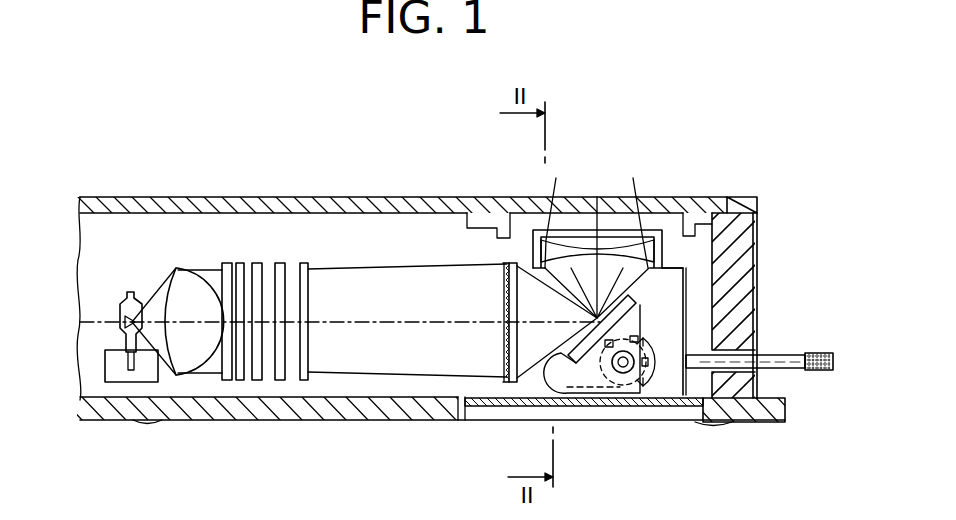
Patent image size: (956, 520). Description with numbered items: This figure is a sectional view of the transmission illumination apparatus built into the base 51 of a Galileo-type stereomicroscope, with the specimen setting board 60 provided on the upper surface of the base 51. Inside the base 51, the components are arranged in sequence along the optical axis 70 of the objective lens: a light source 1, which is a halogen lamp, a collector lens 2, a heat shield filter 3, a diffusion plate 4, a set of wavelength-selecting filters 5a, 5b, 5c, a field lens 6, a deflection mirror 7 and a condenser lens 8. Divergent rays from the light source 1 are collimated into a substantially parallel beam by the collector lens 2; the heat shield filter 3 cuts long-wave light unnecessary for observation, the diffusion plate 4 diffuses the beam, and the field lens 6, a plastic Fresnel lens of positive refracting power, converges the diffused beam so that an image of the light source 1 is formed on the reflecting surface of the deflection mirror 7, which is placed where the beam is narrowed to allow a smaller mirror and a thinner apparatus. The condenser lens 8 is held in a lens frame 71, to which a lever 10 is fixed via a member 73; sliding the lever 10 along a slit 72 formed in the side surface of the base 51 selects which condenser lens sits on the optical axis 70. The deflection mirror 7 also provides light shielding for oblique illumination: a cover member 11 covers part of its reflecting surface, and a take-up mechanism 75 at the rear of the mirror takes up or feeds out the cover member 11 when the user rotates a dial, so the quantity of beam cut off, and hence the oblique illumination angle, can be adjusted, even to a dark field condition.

The light source 1 is at (96, 228).
The collector lens 2 is at (180, 267).
The heat shield filter 3 is at (228, 262).
The diffusion plate 4 is at (250, 263).
The filter 5a is at (310, 256).
The filter 5b is at (280, 321).
The filter 5c is at (304, 321).
The base 51 is at (399, 180).
The field lens 6 is at (518, 262).
The specimen setting board 60 is at (690, 205).
The optical axis 70 is at (387, 315).
The deflection mirror 7 is at (625, 297).
The condenser lens 8 is at (656, 260).
The lens frame 71 is at (690, 266).
The member 73 is at (690, 321).
The slit 72 is at (760, 372).
The lever 10 is at (818, 370).
The cover member 11 is at (560, 340).
The take-up mechanism 75 is at (628, 385).